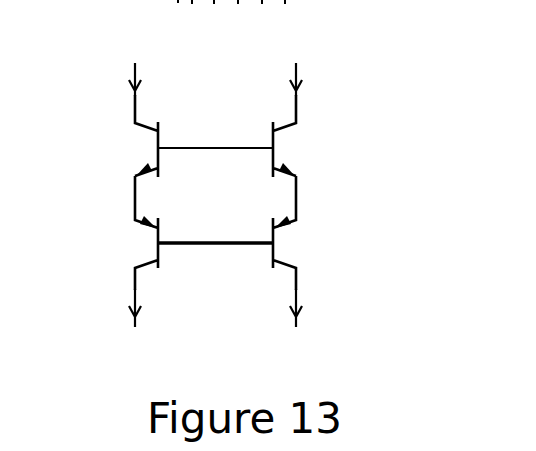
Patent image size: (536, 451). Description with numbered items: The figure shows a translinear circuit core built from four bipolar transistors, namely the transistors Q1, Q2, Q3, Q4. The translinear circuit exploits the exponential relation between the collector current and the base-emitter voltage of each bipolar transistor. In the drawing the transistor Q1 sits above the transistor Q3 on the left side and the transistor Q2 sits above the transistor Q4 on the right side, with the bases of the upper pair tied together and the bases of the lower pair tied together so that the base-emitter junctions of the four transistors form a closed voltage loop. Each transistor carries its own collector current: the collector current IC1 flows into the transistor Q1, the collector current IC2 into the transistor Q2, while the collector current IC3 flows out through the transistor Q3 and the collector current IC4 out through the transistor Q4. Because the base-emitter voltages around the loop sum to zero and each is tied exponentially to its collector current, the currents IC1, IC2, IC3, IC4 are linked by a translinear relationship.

The transistor Q1 is at (131, 136).
The transistor Q2 is at (302, 136).
The transistor Q3 is at (131, 233).
The transistor Q4 is at (303, 233).
The collector current IC1 is at (161, 83).
The collector current IC2 is at (319, 83).
The collector current IC3 is at (161, 310).
The collector current IC4 is at (319, 310).